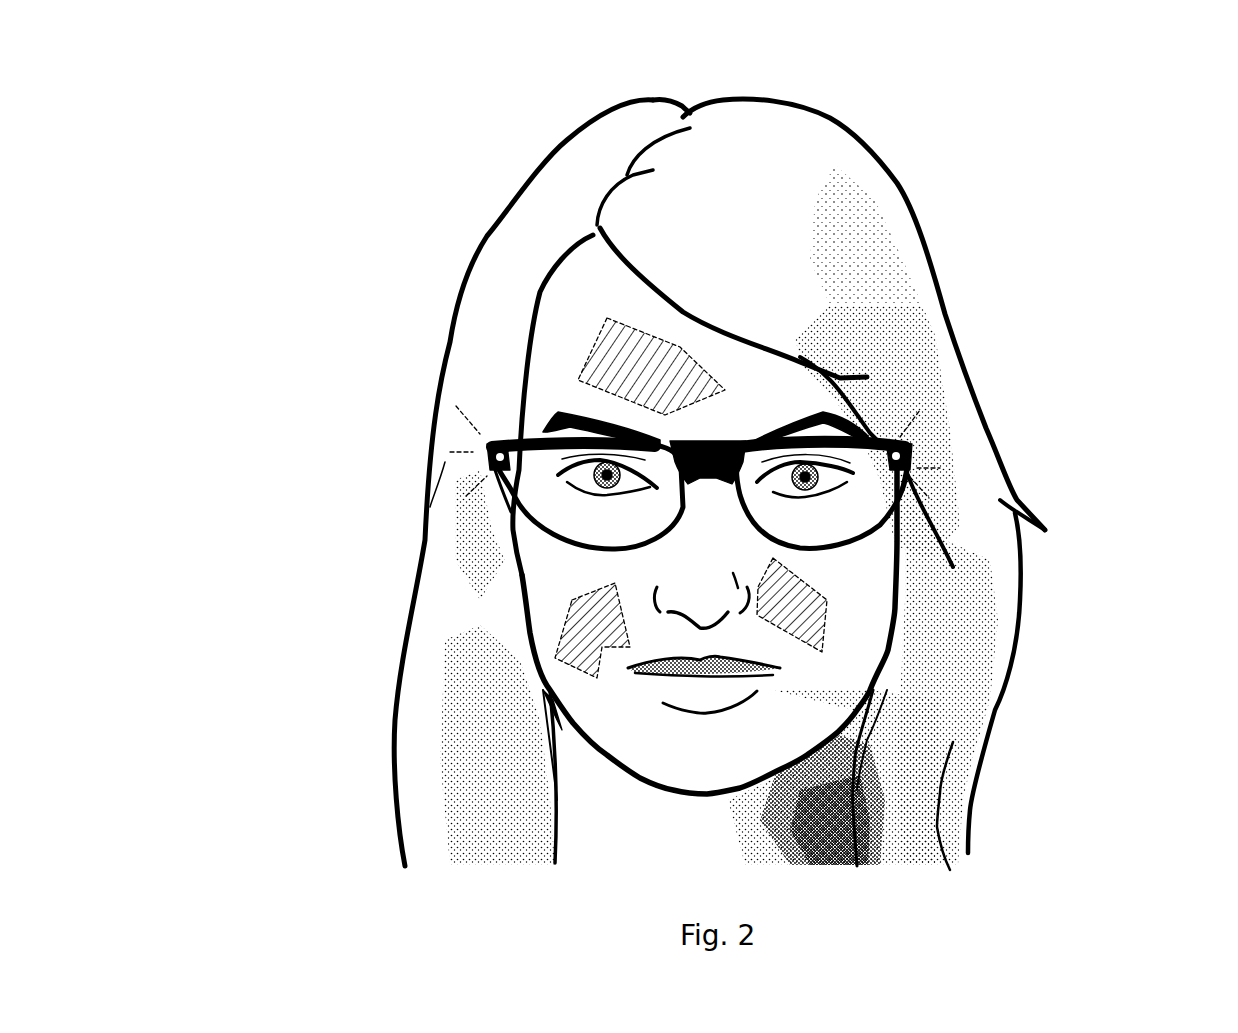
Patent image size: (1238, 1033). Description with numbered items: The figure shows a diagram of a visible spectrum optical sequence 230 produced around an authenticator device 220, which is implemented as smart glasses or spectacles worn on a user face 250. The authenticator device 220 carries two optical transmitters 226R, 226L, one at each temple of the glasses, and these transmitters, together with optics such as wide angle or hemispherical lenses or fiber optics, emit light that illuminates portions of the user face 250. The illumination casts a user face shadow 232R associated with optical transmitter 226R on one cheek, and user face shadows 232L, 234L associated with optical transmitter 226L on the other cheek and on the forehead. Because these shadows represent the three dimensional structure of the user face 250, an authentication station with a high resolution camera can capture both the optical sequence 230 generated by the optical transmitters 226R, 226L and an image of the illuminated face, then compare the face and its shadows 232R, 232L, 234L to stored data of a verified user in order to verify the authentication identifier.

The visible spectrum optical sequence 230 is at (158, 94).
The authenticator device 220 is at (862, 547).
The optical transmitter 226L is at (910, 450).
The optical transmitter 226R is at (490, 461).
The user face shadow 234L is at (590, 342).
The user face shadow 232L is at (563, 637).
The user face shadow 232R is at (823, 628).
The user face 250 is at (494, 557).